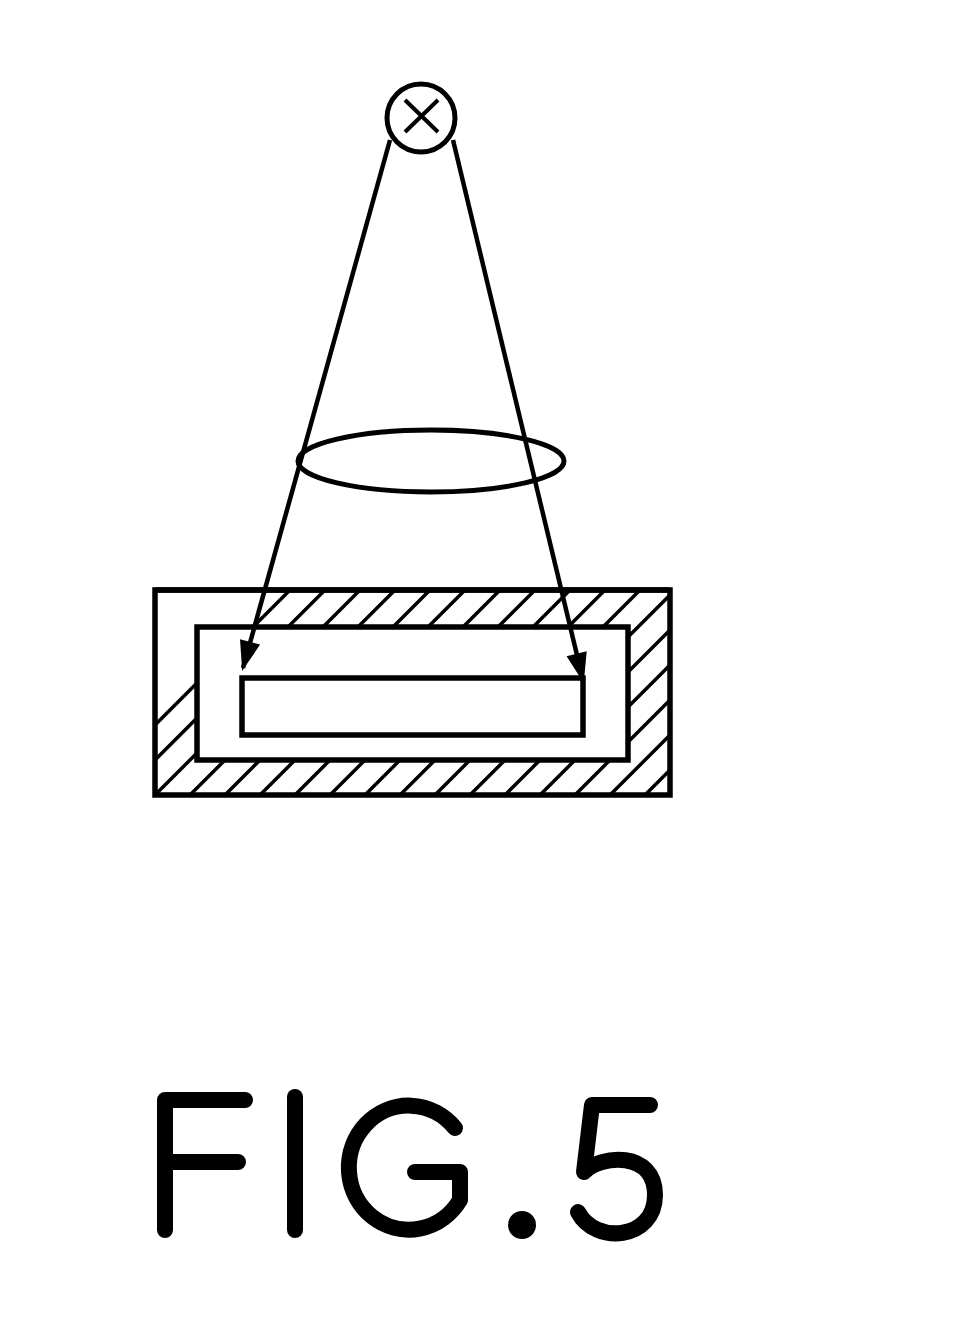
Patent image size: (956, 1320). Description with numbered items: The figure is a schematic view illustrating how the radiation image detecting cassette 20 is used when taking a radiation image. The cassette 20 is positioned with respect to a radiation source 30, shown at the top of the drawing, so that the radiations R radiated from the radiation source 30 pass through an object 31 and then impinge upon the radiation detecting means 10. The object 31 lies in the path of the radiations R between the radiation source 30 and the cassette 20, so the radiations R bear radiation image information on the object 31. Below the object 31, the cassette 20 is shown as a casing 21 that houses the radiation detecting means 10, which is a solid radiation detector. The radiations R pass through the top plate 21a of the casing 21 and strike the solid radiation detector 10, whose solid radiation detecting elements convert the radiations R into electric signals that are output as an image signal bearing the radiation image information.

The radiation source 30 is at (445, 88).
The radiations R is at (492, 262).
The object 31 is at (540, 452).
The radiation image detecting cassette 20 is at (466, 675).
The casing 21 is at (672, 688).
The top plate 21a is at (222, 588).
The radiation detecting means 10 is at (535, 738).